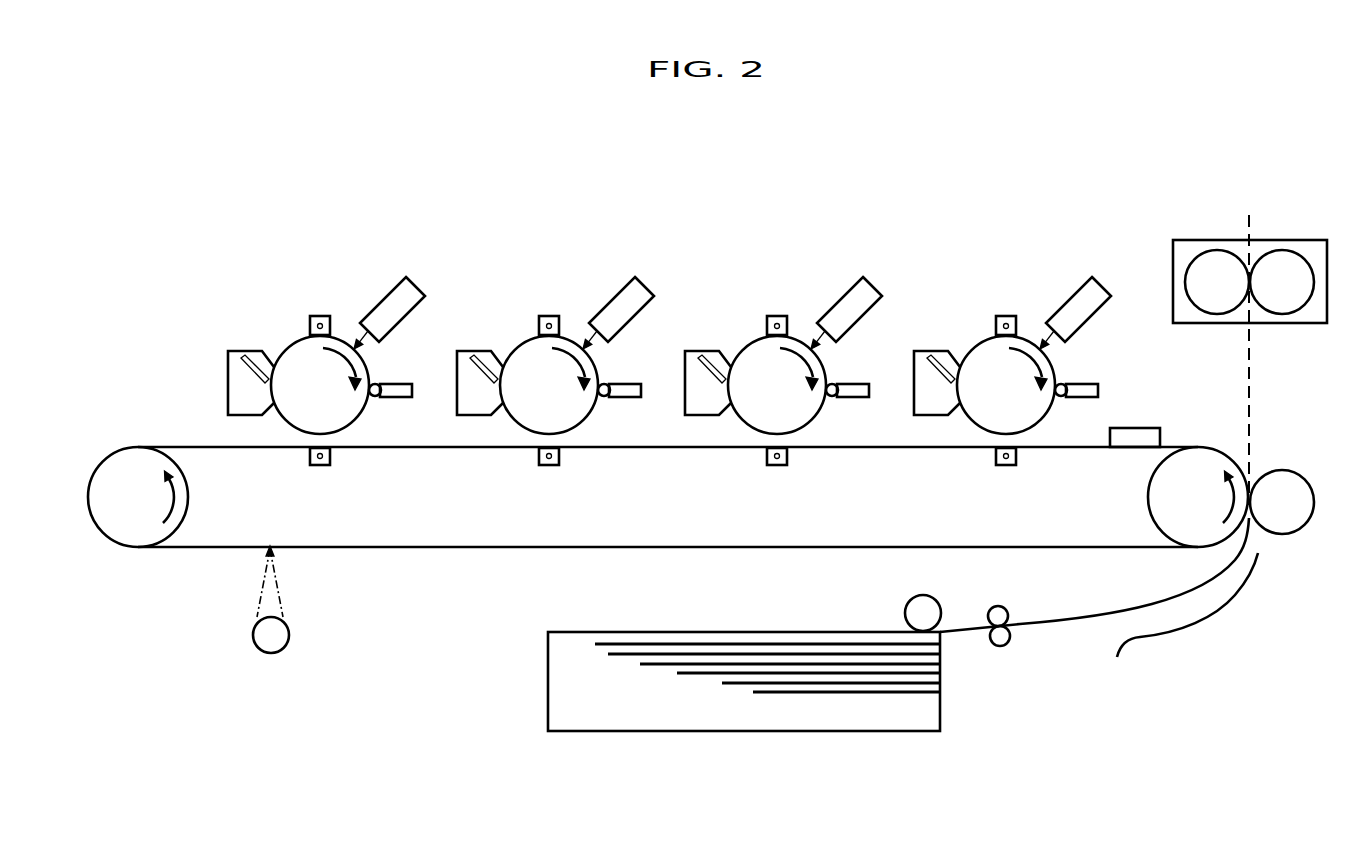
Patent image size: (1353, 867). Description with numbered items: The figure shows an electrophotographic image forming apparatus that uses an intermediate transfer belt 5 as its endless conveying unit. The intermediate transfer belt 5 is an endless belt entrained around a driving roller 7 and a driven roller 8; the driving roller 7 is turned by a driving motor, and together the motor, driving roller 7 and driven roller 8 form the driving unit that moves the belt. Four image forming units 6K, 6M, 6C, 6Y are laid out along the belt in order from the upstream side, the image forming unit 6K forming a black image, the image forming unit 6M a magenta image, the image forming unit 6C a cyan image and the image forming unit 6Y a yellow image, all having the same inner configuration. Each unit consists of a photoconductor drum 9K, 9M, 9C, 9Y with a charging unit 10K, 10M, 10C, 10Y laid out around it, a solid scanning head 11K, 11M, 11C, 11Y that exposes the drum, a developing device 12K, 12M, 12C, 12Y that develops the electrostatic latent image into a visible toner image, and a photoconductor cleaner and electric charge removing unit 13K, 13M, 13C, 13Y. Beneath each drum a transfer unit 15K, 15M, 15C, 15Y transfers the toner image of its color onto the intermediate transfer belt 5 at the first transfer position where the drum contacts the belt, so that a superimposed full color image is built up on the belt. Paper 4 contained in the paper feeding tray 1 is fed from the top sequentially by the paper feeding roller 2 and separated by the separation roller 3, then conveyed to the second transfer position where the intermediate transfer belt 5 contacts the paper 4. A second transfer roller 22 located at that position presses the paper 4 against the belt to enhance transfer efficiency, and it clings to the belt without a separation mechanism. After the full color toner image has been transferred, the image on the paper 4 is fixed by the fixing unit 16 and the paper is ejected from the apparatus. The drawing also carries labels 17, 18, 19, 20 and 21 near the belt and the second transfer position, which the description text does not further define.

The paper feeding tray 1 is at (678, 732).
The paper feeding roller 2 is at (903, 615).
The separation roller 3 is at (1007, 645).
The paper 4 is at (745, 643).
The intermediate transfer belt 5 is at (583, 548).
The image forming unit 6Y is at (339, 287).
The image forming unit 6C is at (568, 339).
The image forming unit 6M is at (796, 339).
The image forming unit 6K is at (1025, 339).
The driving roller 7 is at (115, 530).
The driven roller 8 is at (1148, 502).
The photoconductor drum 9Y is at (362, 412).
The photoconductor drum 9C is at (569, 389).
The photoconductor drum 9M is at (797, 389).
The photoconductor drum 9K is at (1027, 389).
The charging unit 10Y is at (312, 317).
The charging unit 10C is at (535, 306).
The charging unit 10M is at (763, 306).
The charging unit 10K is at (992, 306).
The solid scanning head 11Y is at (407, 277).
The solid scanning head 11C is at (631, 292).
The solid scanning head 11M is at (859, 292).
The solid scanning head 11K is at (1088, 292).
The developing device 12Y is at (397, 384).
The developing device 12C is at (628, 367).
The developing device 12M is at (856, 367).
The developing device 12K is at (1085, 367).
The electric charge removing unit 13Y is at (233, 350).
The electric charge removing unit 13C is at (480, 356).
The electric charge removing unit 13M is at (708, 356).
The electric charge removing unit 13K is at (937, 356).
The transfer unit 15Y is at (320, 467).
The transfer unit 15C is at (537, 480).
The transfer unit 15M is at (765, 480).
The transfer unit 15K is at (994, 480).
The fixing unit 16 is at (1275, 240).
The optical sensor 17 is at (271, 628).
The optical sensor 18 is at (271, 628).
The optical sensor 19 is at (270, 653).
The belt cleaning device 20 is at (1135, 428).
The secondary transfer nip 21 is at (1253, 529).
The second transfer roller 22 is at (1280, 470).